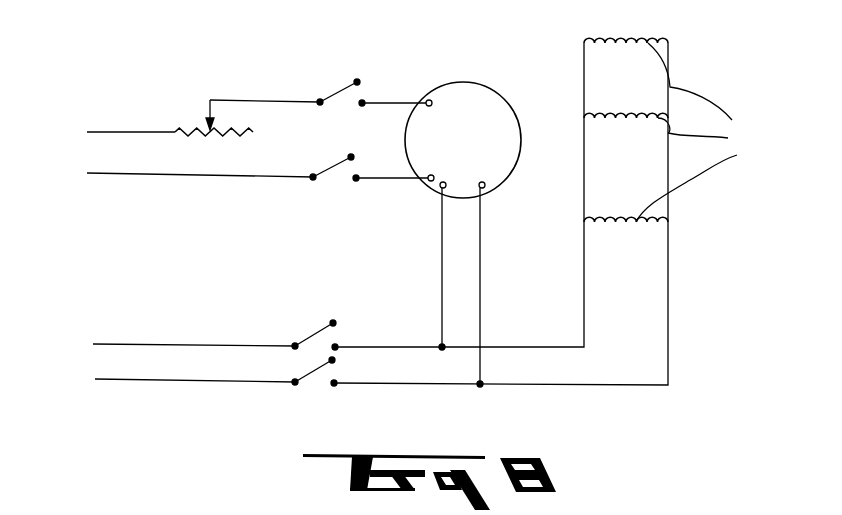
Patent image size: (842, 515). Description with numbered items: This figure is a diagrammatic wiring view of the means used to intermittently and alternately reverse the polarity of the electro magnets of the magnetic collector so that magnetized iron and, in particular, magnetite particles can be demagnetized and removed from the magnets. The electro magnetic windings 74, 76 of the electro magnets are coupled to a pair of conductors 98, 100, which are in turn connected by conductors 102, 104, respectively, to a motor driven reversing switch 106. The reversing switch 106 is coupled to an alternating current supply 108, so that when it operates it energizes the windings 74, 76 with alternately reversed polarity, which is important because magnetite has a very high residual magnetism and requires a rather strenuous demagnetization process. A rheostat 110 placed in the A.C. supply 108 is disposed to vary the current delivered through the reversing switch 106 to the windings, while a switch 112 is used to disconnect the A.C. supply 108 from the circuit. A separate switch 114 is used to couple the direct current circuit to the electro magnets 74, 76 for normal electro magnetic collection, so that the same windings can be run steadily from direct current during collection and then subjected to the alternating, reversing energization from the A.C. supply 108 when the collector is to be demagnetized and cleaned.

The electro magnetic winding 74 is at (767, 112).
The electro magnetic winding 76 is at (745, 143).
The conductor 98 is at (584, 310).
The conductor 100 is at (668, 333).
The conductor 102 is at (440, 263).
The conductor 104 is at (482, 275).
The motor driven reversing switch 106 is at (480, 93).
The alternating current supply 108 is at (82, 166).
The rheostat 110 is at (192, 128).
The switch 112 is at (336, 130).
The switch 114 is at (310, 353).